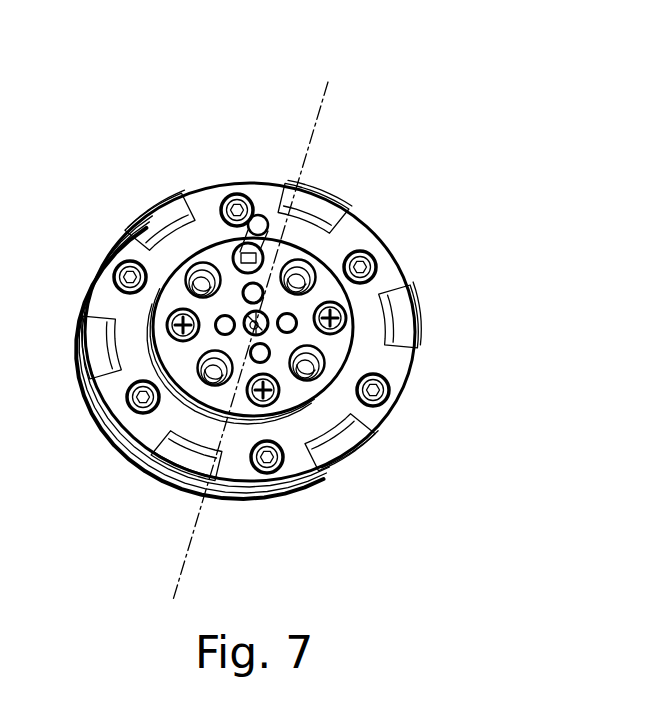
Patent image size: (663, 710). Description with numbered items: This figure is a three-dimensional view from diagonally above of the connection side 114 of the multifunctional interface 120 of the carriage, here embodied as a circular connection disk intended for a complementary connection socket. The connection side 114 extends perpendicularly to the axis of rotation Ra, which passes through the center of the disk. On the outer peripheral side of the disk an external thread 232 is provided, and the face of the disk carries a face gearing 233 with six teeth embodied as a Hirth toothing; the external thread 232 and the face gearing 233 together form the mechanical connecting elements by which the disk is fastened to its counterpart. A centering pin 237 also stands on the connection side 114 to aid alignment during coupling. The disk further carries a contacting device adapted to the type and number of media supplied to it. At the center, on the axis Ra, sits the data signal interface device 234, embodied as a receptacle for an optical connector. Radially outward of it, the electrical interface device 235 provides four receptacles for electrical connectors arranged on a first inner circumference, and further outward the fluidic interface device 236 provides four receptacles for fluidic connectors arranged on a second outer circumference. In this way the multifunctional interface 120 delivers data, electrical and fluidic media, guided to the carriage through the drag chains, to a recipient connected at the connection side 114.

The connection side 114 is at (231, 183).
The multifunctional interface 120 is at (404, 200).
The external thread 232 is at (180, 495).
The face gearing 233 is at (157, 478).
The data signal interface device 234 is at (265, 312).
The electrical interface device 235 is at (266, 355).
The fluidic interface device 236 is at (222, 374).
The centering pin 237 is at (235, 253).
The axis of rotation Ra is at (263, 327).